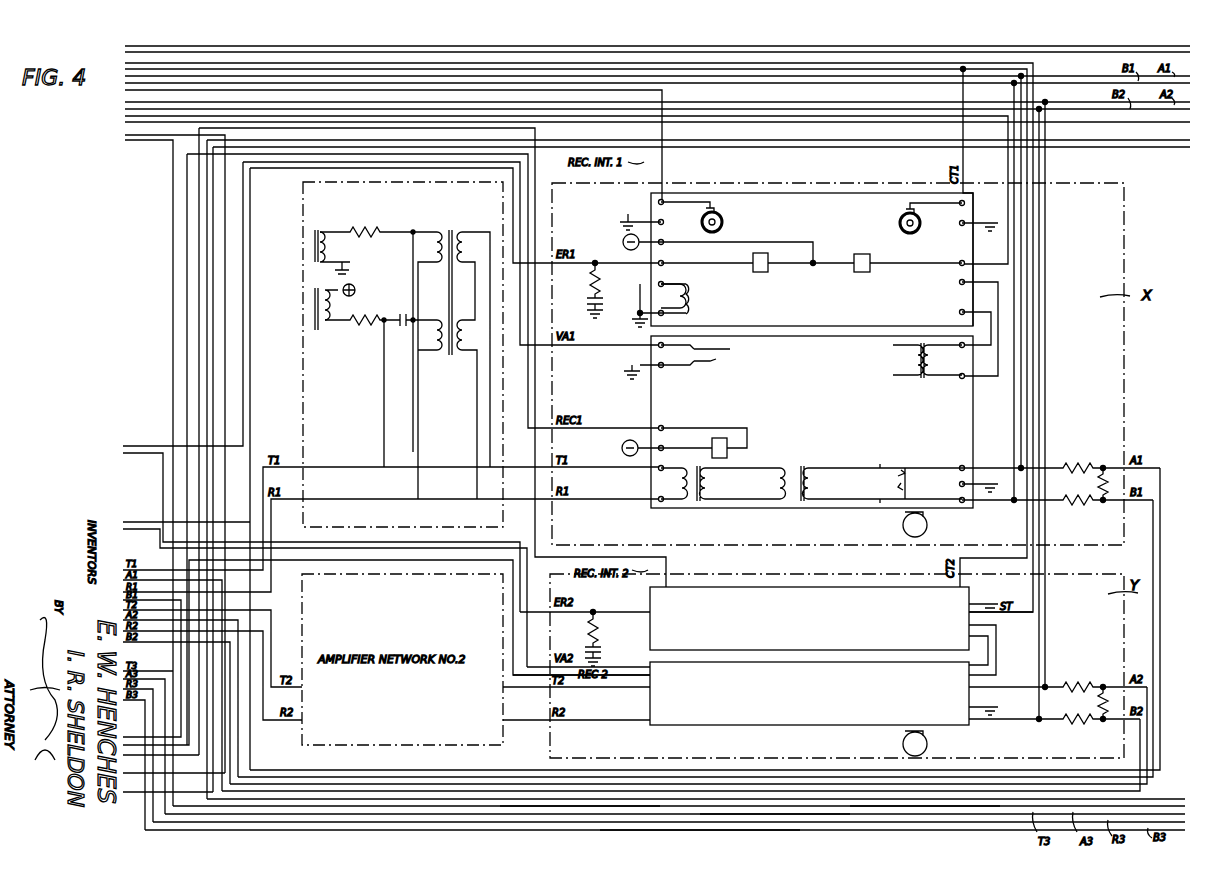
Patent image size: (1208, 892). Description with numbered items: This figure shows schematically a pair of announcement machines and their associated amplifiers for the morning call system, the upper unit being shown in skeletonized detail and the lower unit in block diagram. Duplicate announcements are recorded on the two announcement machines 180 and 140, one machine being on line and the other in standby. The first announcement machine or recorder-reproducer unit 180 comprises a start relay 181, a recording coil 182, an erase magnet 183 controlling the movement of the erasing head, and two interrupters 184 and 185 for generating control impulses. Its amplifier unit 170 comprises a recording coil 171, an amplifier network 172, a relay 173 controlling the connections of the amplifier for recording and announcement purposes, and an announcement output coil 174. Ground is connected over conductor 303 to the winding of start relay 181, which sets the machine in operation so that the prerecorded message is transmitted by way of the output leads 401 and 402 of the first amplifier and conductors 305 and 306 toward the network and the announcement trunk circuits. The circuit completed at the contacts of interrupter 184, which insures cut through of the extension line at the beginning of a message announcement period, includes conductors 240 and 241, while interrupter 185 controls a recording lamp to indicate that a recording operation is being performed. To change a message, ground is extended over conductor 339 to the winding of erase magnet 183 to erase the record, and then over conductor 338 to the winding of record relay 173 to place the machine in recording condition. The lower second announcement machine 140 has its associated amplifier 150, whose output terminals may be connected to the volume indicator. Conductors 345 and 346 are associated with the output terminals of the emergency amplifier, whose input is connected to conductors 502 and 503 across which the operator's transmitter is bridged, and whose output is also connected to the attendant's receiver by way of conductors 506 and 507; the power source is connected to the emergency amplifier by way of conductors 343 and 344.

The conductor 305 is at (237, 69).
The conductor 306 is at (297, 80).
The conductor 240 is at (350, 80).
The conductor 345 is at (412, 50).
The conductor 346 is at (494, 50).
The conductor 303 is at (822, 92).
The conductor 241 is at (965, 168).
The conductor 344 is at (173, 241).
The conductor 338 is at (186, 278).
The conductor 343 is at (228, 462).
The conductor 339 is at (131, 520).
The amplifier network 172 is at (356, 388).
The announcement machine No. 1 180 is at (820, 219).
The interrupter 185 is at (722, 214).
The interrupter 184 is at (915, 232).
The erase magnet 183 is at (752, 255).
The start relay 181 is at (854, 258).
The recording coil 182 is at (696, 288).
The amplifier unit 170 is at (817, 413).
The relay 173 is at (727, 456).
The recording coil 171 is at (695, 512).
The announcement output coil 174 is at (810, 460).
The output lead 401 is at (1010, 408).
The output lead 402 is at (1010, 434).
The announcement machine No. 2 140 is at (806, 641).
The amplifier 150 is at (806, 711).
The conductor 507 is at (648, 810).
The conductor 503 is at (838, 822).
The conductor 502 is at (958, 810).
The conductor 506 is at (748, 832).